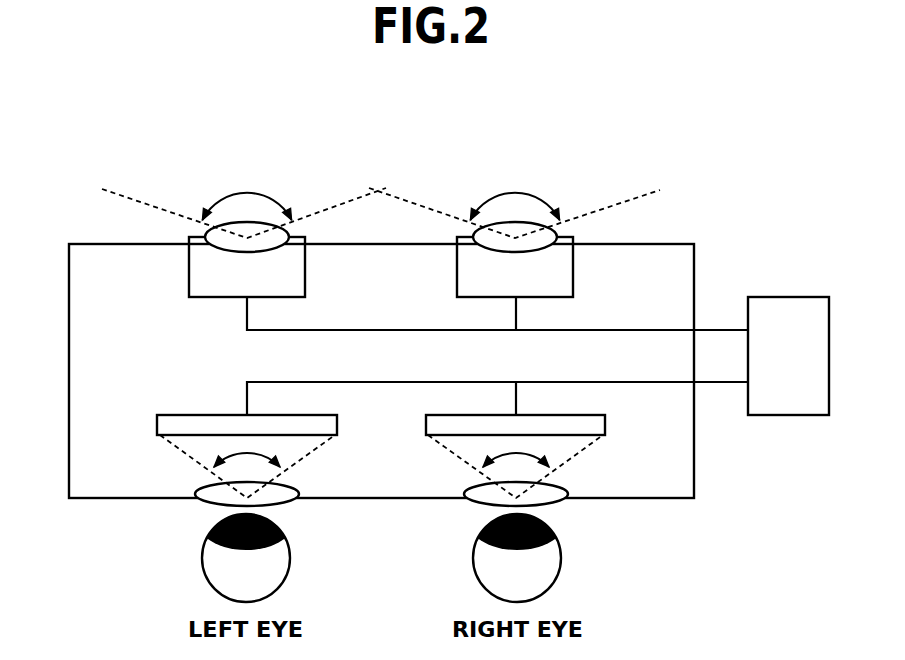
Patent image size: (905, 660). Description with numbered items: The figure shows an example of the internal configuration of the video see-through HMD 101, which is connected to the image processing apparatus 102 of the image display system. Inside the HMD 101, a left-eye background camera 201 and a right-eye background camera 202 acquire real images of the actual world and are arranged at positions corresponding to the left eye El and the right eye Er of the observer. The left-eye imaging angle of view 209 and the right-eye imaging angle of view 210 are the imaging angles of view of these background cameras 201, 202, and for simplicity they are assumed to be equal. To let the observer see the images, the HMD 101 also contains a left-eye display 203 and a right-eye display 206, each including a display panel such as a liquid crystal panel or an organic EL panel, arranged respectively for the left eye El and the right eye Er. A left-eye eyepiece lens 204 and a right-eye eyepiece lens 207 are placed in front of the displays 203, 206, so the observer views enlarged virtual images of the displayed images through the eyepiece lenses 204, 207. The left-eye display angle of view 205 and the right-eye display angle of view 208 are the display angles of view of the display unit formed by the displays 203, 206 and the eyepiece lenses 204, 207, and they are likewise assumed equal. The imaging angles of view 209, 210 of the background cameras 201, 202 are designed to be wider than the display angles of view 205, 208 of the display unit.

The video see-through HMD 101 is at (672, 498).
The image processing apparatus 102 is at (788, 356).
The left-eye background camera 201 is at (189, 270).
The right-eye background camera 202 is at (573, 270).
The left-eye display 203 is at (201, 415).
The left-eye eyepiece lens 204 is at (208, 500).
The left-eye display angle of view 205 is at (253, 455).
The right-eye display 206 is at (540, 415).
The right-eye eyepiece lens 207 is at (480, 500).
The right-eye display angle of view 208 is at (523, 446).
The left-eye imaging angle of view 209 is at (247, 192).
The right-eye imaging angle of view 210 is at (515, 192).
The left eye El is at (277, 562).
The right eye Er is at (548, 562).